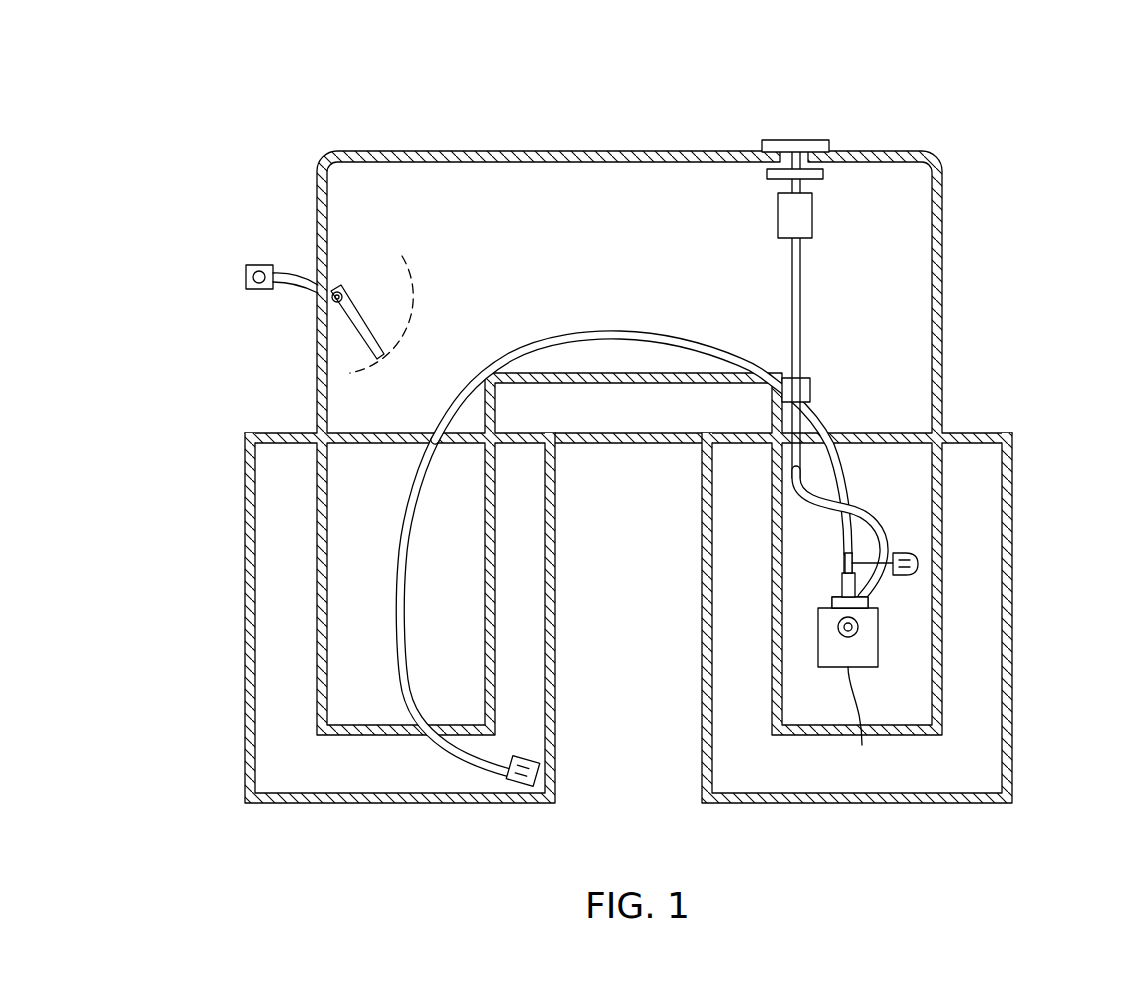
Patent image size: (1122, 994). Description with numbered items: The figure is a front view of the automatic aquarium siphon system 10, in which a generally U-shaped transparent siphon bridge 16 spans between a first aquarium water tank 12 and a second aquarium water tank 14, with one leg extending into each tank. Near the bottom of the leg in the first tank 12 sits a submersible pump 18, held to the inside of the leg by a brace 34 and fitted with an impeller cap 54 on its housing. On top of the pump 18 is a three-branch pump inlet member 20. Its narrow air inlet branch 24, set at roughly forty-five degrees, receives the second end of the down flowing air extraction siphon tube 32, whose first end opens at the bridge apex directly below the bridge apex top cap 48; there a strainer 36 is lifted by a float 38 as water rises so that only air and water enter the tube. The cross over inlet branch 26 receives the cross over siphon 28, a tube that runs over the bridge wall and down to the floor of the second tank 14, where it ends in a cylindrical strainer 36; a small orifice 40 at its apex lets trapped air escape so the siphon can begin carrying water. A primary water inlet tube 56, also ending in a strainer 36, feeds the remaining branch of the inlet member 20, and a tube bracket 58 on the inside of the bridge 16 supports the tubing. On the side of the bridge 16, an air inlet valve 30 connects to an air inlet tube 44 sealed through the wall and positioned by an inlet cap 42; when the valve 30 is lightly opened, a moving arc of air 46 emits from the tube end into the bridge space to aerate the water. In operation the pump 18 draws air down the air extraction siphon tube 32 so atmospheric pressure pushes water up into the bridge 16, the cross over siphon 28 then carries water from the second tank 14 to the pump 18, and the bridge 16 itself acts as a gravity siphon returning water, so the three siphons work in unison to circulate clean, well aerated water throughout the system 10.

The automatic aquarium siphon system 10 is at (893, 105).
The first aquarium water tank 12 is at (990, 767).
The second aquarium water tank 14 is at (530, 630).
The siphon bridge 16 is at (318, 182).
The submersible pump 18 is at (864, 723).
The pump inlet member 20 is at (842, 580).
The air inlet branch 24 is at (857, 597).
The cross over inlet branch 26 is at (845, 562).
The cross over siphon 28 is at (406, 560).
The air inlet valve 30 is at (246, 272).
The air extraction siphon tube 32 is at (801, 297).
The brace 34 is at (858, 627).
The strainer 36 is at (824, 175).
The float 38 is at (813, 218).
The orifice 40 is at (645, 333).
The inlet cap 42 is at (333, 290).
The air inlet tube 44 is at (362, 340).
The moving arc of air 46 is at (417, 303).
The bridge apex top cap 48 is at (770, 140).
The impeller cap 54 is at (830, 603).
The primary water inlet tube 56 is at (866, 545).
The tube bracket 58 is at (811, 391).